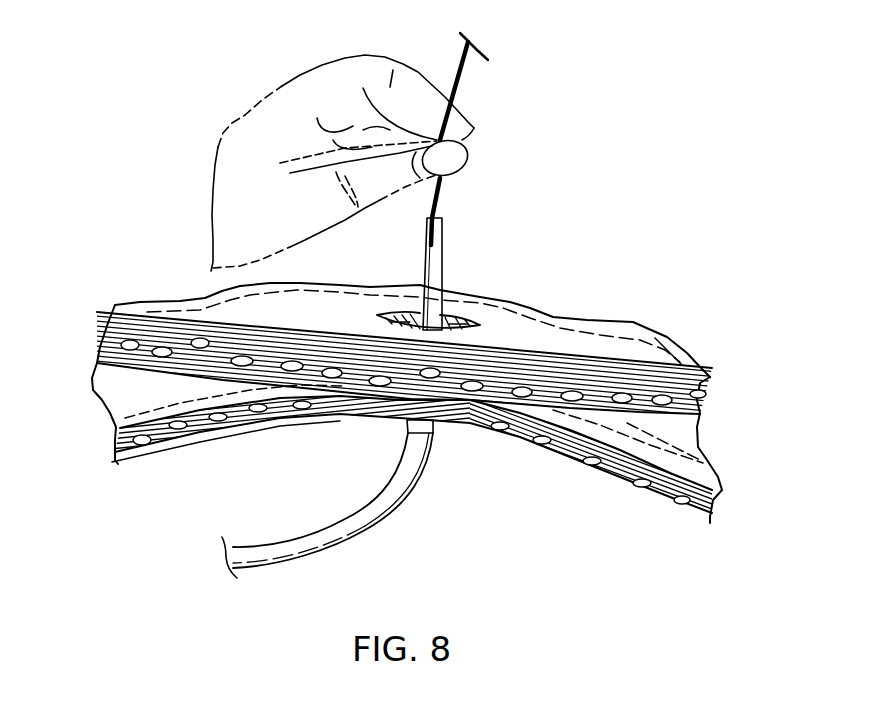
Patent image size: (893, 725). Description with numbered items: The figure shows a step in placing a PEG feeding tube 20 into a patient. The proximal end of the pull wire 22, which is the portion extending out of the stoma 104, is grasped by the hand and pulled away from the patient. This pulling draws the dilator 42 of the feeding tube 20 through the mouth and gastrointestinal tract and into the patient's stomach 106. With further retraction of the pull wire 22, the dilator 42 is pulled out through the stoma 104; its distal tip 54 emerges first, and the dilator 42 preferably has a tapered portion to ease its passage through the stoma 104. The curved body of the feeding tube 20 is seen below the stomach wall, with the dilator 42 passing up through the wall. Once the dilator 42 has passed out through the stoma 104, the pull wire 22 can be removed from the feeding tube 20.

The feeding tube 20 is at (350, 540).
The pull wire 22 is at (478, 61).
The dilator 42 is at (417, 477).
The distal tip 54 is at (452, 238).
The stoma 104 is at (447, 323).
The stomach 106 is at (551, 537).